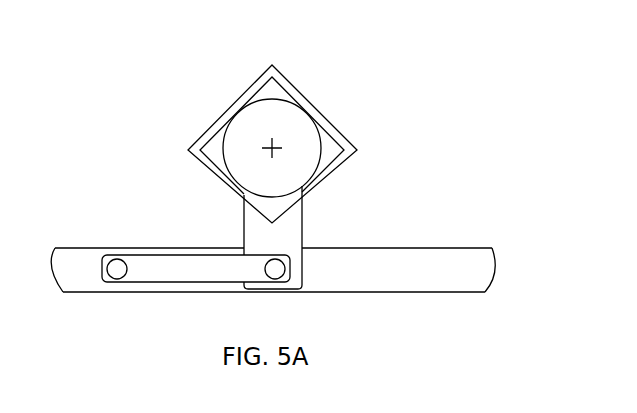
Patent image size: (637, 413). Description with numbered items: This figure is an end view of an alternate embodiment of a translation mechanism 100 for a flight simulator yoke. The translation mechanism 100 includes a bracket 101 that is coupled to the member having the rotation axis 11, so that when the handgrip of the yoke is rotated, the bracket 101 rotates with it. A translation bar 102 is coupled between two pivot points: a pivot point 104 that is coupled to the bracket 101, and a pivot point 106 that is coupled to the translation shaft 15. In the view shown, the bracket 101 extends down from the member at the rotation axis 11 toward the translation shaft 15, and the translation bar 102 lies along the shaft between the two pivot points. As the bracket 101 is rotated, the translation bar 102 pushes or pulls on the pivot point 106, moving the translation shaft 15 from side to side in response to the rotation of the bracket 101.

The translation mechanism 100 is at (142, 147).
The rotation axis 11 is at (271, 140).
The translation shaft 15 is at (432, 270).
The bracket 101 is at (250, 219).
The translation bar 102 is at (190, 263).
The pivot point 104 is at (275, 269).
The pivot point 106 is at (117, 270).